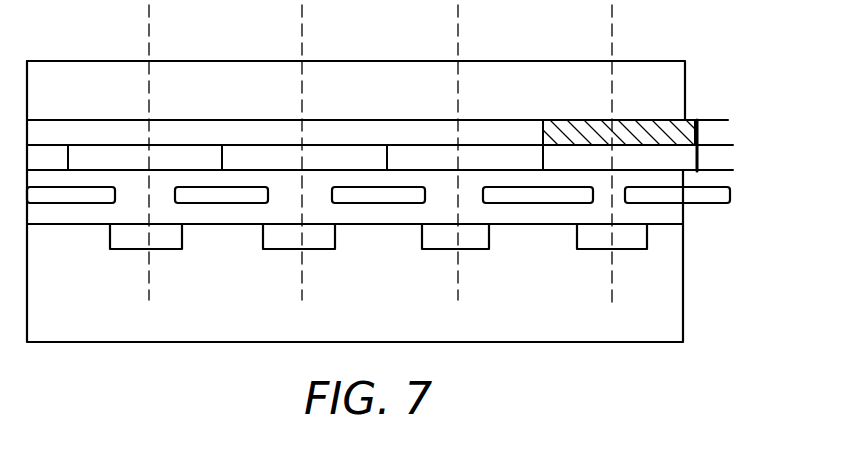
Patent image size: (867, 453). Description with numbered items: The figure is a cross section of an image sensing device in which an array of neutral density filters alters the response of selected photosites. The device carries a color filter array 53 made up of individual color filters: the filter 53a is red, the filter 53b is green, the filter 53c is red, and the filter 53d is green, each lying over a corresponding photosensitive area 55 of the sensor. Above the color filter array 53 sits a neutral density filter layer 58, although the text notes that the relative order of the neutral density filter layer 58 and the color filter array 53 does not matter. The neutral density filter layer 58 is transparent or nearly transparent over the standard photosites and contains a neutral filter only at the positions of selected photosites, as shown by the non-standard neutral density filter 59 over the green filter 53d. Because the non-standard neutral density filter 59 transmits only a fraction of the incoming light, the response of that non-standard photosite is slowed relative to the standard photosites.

The color filter array 53 is at (732, 158).
The red color filter 53a is at (110, 152).
The green color filter 53b is at (278, 152).
The red color filter 53c is at (432, 154).
The green color filter 53d is at (653, 158).
The neutral density filter layer 58 is at (493, 119).
The non-standard neutral density filter 59 is at (650, 120).
The photosensitive area 55 is at (645, 242).